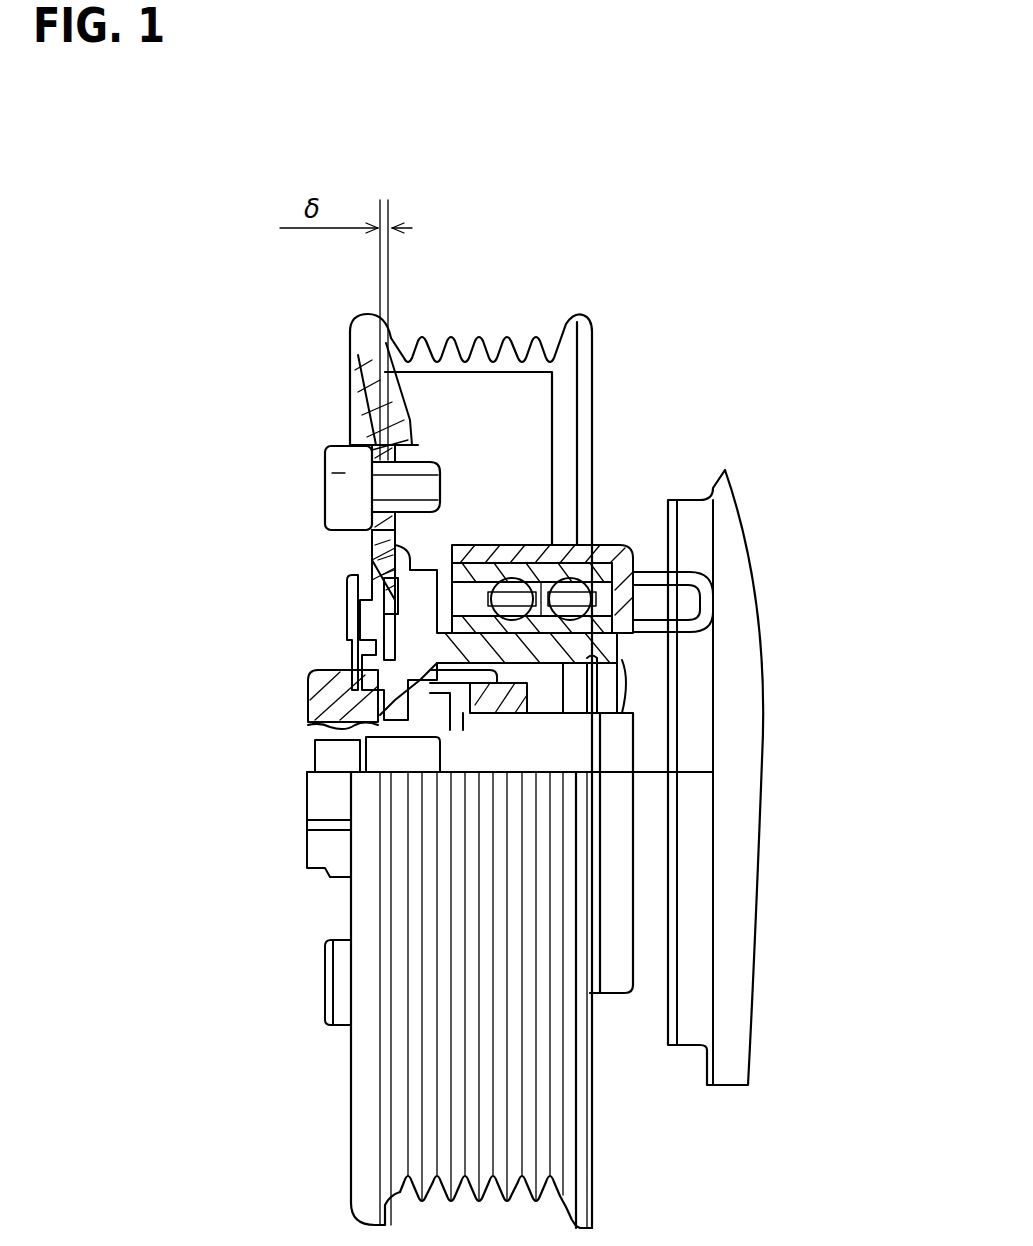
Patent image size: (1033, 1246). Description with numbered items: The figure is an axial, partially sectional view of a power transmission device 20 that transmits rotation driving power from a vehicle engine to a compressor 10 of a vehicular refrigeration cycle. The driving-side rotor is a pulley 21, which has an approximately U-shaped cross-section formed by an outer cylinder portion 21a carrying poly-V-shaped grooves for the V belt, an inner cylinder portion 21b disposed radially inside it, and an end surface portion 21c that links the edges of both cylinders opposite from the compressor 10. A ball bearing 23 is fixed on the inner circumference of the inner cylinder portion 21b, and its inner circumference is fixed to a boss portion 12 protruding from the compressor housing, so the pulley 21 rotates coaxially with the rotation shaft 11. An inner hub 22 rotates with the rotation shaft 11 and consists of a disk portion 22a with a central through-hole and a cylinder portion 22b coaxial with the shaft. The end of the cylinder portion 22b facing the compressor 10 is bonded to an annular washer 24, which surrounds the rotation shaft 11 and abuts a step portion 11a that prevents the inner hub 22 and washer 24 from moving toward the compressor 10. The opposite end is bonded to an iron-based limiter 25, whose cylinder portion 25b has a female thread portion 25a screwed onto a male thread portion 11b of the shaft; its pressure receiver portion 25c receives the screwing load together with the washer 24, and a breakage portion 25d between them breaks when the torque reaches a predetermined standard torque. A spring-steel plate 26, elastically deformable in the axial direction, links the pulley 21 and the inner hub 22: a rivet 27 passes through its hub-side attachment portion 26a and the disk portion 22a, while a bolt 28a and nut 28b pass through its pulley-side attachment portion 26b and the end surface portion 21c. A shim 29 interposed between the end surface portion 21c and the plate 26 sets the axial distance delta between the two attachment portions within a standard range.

The compressor 10 is at (693, 980).
The rotation shaft 11 is at (460, 760).
The step portion 11a is at (440, 757).
The male thread portion 11b is at (480, 740).
The boss portion 12 is at (575, 648).
The power transmission device 20 is at (641, 296).
The pulley 21 is at (507, 713).
The outer cylinder portion 21a is at (480, 355).
The inner cylinder portion 21b is at (484, 553).
The end surface portion 21c is at (354, 387).
The inner hub 22 is at (350, 625).
The disk portion 22a is at (355, 555).
The cylinder portion 22b is at (342, 643).
The ball bearing 23 is at (600, 575).
The washer 24 is at (513, 707).
The limiter 25 is at (142, 782).
The female thread portion 25a is at (440, 737).
The cylinder portion 25b is at (380, 728).
The pressure receiver portion 25c is at (338, 693).
The breakage portion 25d is at (310, 678).
The plate 26 is at (372, 548).
The hub-side attachment portion 26a is at (385, 625).
The pulley-side attachment portion 26b is at (372, 502).
The rivet 27 is at (382, 600).
The bolt 28a is at (343, 473).
The nut 28b is at (432, 452).
The shim 29 is at (380, 443).